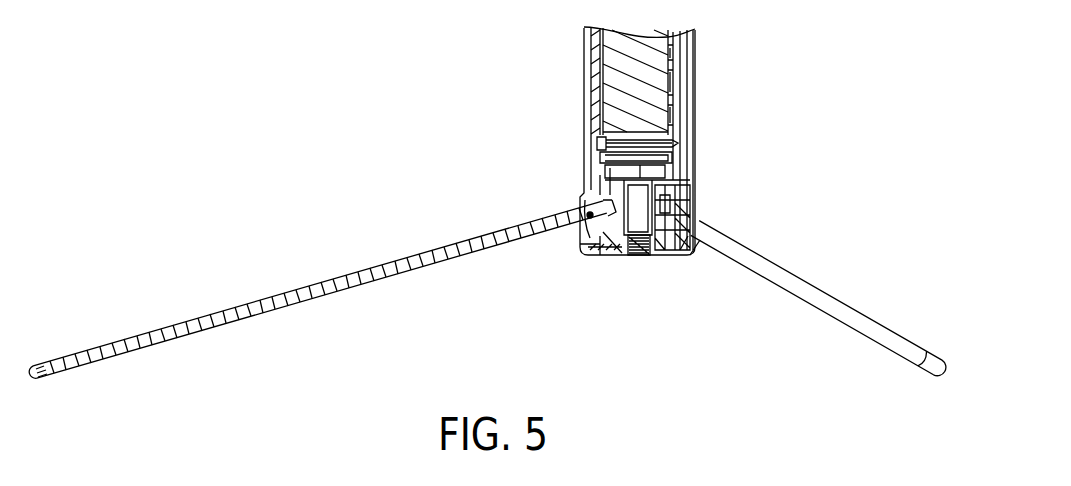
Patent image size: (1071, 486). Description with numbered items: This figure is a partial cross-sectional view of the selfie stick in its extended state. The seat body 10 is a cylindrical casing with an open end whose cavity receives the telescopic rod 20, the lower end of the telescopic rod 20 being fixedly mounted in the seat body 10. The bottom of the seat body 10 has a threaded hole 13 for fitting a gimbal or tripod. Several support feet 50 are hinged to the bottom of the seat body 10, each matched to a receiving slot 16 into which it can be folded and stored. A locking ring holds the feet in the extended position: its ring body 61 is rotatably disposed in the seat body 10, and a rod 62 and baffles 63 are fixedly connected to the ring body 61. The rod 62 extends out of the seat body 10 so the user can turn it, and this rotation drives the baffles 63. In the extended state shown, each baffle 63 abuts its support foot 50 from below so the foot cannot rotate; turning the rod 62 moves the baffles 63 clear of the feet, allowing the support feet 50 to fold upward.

The seat body 10 is at (690, 107).
The threaded hole 13 is at (639, 258).
The receiving slot 16 is at (597, 86).
The telescopic rod 20 is at (652, 77).
The support feet 50 is at (473, 244).
The ring body 61 is at (670, 208).
The rod 62 is at (586, 180).
The baffles 63 is at (597, 257).